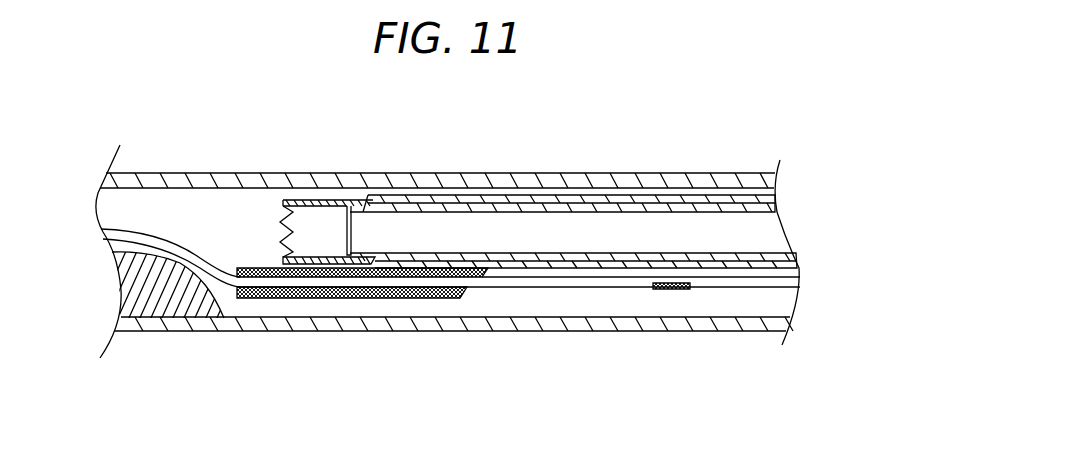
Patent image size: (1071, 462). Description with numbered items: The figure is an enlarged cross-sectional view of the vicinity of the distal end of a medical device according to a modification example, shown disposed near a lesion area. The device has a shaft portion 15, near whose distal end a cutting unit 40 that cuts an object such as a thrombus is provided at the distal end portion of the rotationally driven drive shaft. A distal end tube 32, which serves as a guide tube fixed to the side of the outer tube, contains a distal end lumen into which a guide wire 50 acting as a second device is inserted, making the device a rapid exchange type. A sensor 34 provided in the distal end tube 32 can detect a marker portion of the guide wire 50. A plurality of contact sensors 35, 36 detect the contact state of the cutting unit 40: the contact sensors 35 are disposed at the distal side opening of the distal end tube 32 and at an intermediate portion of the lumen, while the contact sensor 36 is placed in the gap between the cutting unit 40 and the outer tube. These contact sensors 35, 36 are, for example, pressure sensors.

The shaft portion 15 is at (598, 195).
The distal end tube 32 is at (416, 299).
The sensor 34 is at (368, 299).
The contact sensors 35 is at (256, 267).
The contact sensor 36 is at (371, 196).
The cutting unit 40 is at (320, 202).
The guide wire 50 is at (167, 233).